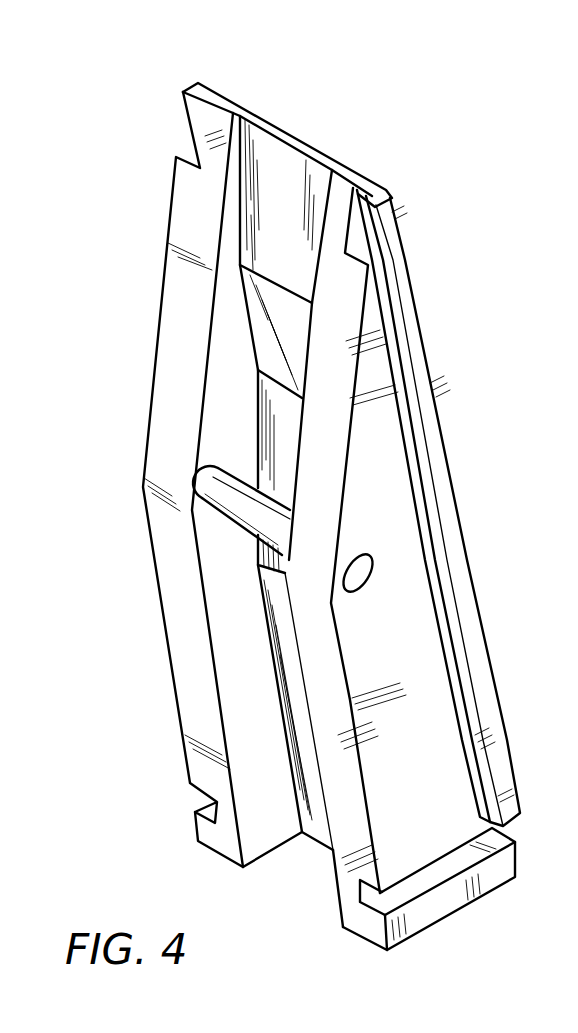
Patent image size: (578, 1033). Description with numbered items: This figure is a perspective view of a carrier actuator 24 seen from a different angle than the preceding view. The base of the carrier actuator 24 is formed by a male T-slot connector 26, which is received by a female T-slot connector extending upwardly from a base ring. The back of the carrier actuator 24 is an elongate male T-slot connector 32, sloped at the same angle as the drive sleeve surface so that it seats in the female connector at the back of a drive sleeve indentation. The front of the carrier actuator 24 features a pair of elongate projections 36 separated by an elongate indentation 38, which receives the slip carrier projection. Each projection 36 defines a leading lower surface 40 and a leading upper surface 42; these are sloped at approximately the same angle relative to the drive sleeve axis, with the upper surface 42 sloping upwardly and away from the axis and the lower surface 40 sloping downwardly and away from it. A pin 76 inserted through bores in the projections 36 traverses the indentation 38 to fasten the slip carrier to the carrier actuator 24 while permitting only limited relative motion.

The carrier actuator 24 is at (447, 740).
The male T-slot connector 26 is at (457, 900).
The elongate male T-slot connector 32 is at (408, 303).
The elongate projections 36 is at (146, 425).
The elongate indentation 38 is at (243, 697).
The leading lower surface 40 is at (203, 668).
The leading upper surface 42 is at (191, 326).
The pin 76 is at (215, 509).